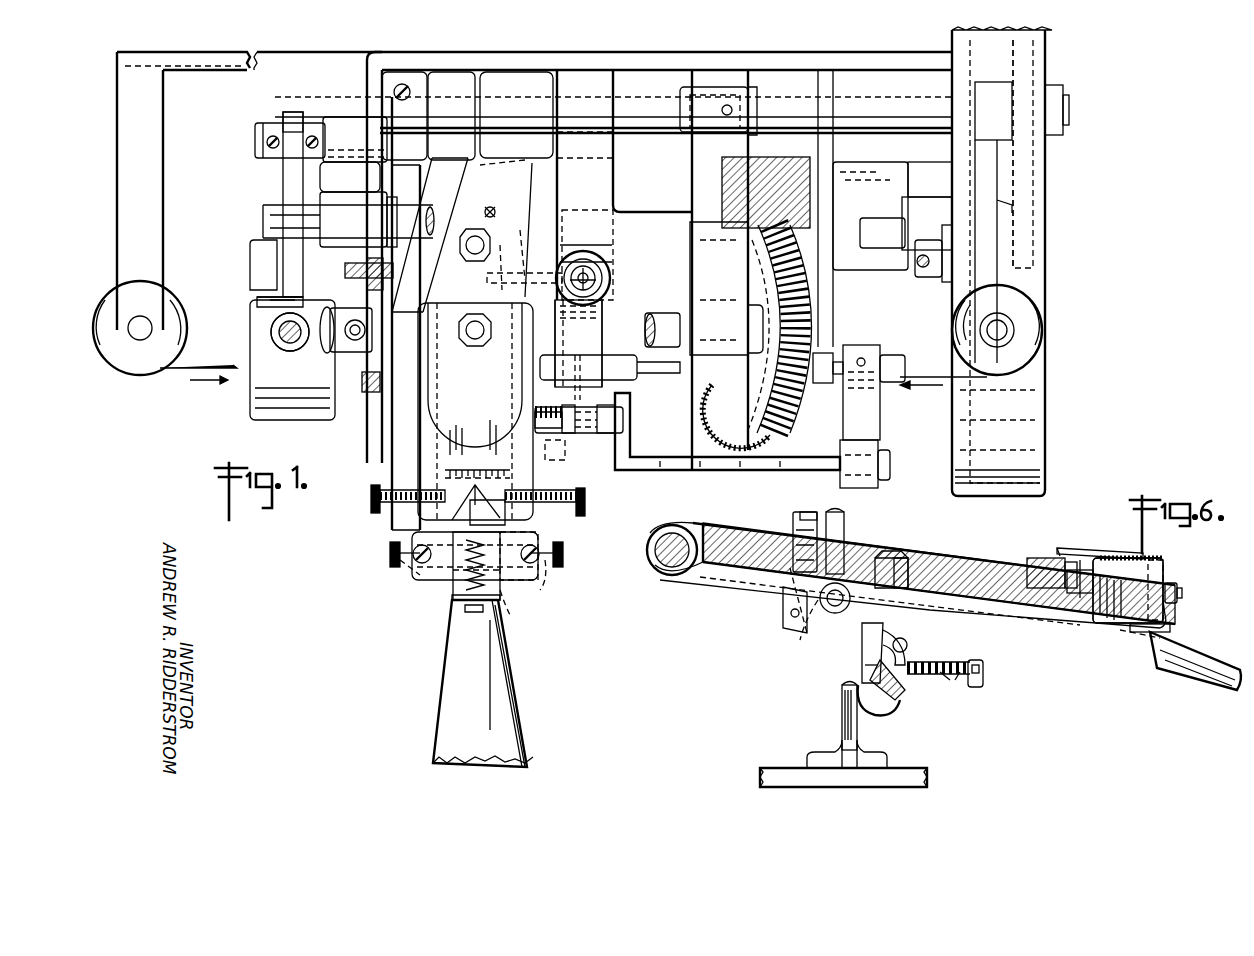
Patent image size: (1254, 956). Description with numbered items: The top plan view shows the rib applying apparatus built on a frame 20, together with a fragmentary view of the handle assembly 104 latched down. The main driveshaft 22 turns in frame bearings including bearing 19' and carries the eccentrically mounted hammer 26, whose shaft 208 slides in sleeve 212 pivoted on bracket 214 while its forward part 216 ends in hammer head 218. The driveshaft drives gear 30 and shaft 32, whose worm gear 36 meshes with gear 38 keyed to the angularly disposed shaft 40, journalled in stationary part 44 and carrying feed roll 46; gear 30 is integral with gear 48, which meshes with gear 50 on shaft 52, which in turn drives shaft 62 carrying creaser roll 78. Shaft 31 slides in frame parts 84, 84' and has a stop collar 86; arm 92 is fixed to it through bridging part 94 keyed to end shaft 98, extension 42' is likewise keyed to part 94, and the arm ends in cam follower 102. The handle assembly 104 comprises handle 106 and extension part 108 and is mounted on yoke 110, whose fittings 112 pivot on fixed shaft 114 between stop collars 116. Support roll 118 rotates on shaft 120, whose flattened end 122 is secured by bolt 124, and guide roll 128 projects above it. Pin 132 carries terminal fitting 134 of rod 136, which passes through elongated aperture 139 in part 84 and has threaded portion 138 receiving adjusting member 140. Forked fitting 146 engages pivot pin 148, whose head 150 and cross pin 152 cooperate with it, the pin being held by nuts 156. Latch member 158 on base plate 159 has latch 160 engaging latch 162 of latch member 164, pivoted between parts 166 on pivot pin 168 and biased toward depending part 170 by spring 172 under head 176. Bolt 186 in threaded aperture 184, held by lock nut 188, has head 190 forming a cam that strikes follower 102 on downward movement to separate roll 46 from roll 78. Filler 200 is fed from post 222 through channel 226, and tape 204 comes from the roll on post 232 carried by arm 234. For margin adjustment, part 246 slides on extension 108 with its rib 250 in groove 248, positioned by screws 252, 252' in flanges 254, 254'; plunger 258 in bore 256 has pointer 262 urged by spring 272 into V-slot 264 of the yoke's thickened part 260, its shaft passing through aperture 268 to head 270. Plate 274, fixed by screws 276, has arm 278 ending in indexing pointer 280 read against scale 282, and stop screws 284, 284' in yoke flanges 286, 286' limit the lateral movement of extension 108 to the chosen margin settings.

In FIG. 1, the bearing 19' is at (350, 180).
In FIG. 1, the frame 20 is at (386, 56).
In FIG. 1, the main driveshaft 22 is at (258, 212).
In FIG. 1, the hammer 26 is at (278, 178).
In FIG. 1, the gear 30 is at (1025, 240).
In FIG. 1, the shaft 31 is at (638, 356).
In FIG. 1, the shaft 32 is at (885, 180).
In FIG. 1, the worm gear 36 is at (812, 160).
In FIG. 1, the gear 38 is at (791, 329).
In FIG. 1, the angularly disposed shaft 40 is at (665, 312).
In FIG. 1, the extension 42' is at (778, 375).
In FIG. 1, the frame part 44 is at (726, 288).
In FIG. 1, the feed roll 46 is at (320, 352).
In FIG. 1, the gear 48 is at (988, 80).
In FIG. 1, the gear 50 is at (988, 170).
In FIG. 1, the shaft 52 is at (935, 278).
In FIG. 1, the shaft 62 is at (270, 330).
In FIG. 1, the creaser roll 78 is at (282, 350).
In FIG. 1, the frame part 84 is at (652, 270).
In FIG. 1, the frame part 84' is at (813, 250).
In FIG. 1, the stop collar 86 is at (608, 340).
In FIG. 1, the arm 92 is at (698, 460).
In FIG. 1, the bridging part 94 is at (880, 425).
In FIG. 1, the end shaft 98 is at (892, 465).
In FIG. 1, the cam follower 102 is at (630, 425).
In FIG. 1, the handle assembly 104 is at (440, 408).
In FIG. 1, the handle 106 is at (520, 690).
In FIG. 6, the handle 106 is at (1212, 655).
In FIG. 1, the extension part 108 is at (475, 379).
In FIG. 1, the yoke 110 is at (530, 140).
In FIG. 6, the yoke 110 is at (708, 518).
In FIG. 1, the fittings 112 is at (455, 74).
In FIG. 1, the fixed shaft 114 is at (527, 80).
In FIG. 6, the fixed shaft 114 is at (670, 565).
In FIG. 1, the stop collars 116 is at (407, 74).
In FIG. 1, the bottom support roll 118 is at (250, 386).
In FIG. 1, the shaft 120 is at (396, 335).
In FIG. 1, the flattened part 122 is at (460, 340).
In FIG. 6, the flattened part 122 is at (875, 555).
In FIG. 1, the bolt 124 is at (500, 345).
In FIG. 6, the bolt 124 is at (905, 558).
In FIG. 1, the guide roll 128 is at (358, 342).
In FIG. 1, the pin 132 is at (517, 247).
In FIG. 6, the pin 132 is at (833, 612).
In FIG. 6, the terminal fitting 134 is at (801, 628).
In FIG. 1, the rod 136 is at (586, 265).
In FIG. 6, the rod 136 is at (845, 520).
In FIG. 1, the threaded end portion 138 is at (576, 295).
In FIG. 1, the elongated aperture 139 is at (600, 272).
In FIG. 1, the adjusting member 140 is at (600, 280).
In FIG. 1, the forked fitting 146 is at (498, 210).
In FIG. 6, the forked fitting 146 is at (770, 595).
In FIG. 1, the pivot pin 148 is at (478, 258).
In FIG. 6, the pivot pin 148 is at (808, 510).
In FIG. 6, the enlarged head 150 is at (790, 632).
In FIG. 6, the cross pin 152 is at (790, 613).
In FIG. 1, the nuts 156 is at (475, 228).
In FIG. 6, the nuts 156 is at (793, 520).
In FIG. 6, the latch member 158 is at (845, 740).
In FIG. 6, the frame base plate 159 is at (912, 770).
In FIG. 6, the latch 160 is at (845, 690).
In FIG. 6, the latch 162 is at (885, 718).
In FIG. 6, the latch member 164 is at (895, 698).
In FIG. 6, the spaced parts 166 is at (907, 645).
In FIG. 6, the pivot pin 168 is at (925, 676).
In FIG. 6, the part 170 is at (862, 640).
In FIG. 6, the spring 172 is at (955, 682).
In FIG. 6, the head 176 is at (983, 672).
In FIG. 1, the threaded aperture 184 is at (560, 425).
In FIG. 1, the bolt 186 is at (595, 410).
In FIG. 1, the lock nut 188 is at (588, 366).
In FIG. 1, the cam 190 is at (620, 405).
In FIG. 1, the filler 200 is at (925, 375).
In FIG. 1, the tape 204 is at (172, 372).
In FIG. 1, the shaft 208 is at (291, 110).
In FIG. 1, the sleeve 212 is at (270, 124).
In FIG. 1, the bracket 214 is at (343, 120).
In FIG. 1, the forward part 216 is at (282, 254).
In FIG. 1, the hammer head 218 is at (270, 292).
In FIG. 1, the post 222 is at (1000, 332).
In FIG. 1, the channel 226 is at (392, 272).
In FIG. 1, the post 232 is at (148, 323).
In FIG. 1, the arm 234 is at (160, 225).
In FIG. 1, the part 246 is at (455, 604).
In FIG. 6, the part 246 is at (1163, 588).
In FIG. 6, the groove 248 is at (1133, 640).
In FIG. 6, the projecting rib 250 is at (1122, 632).
In FIG. 1, the adjusting screw 252 is at (385, 550).
In FIG. 1, the adjusting screw 252' is at (570, 550).
In FIG. 1, the flange 254 is at (384, 577).
In FIG. 1, the flange 254' is at (553, 585).
In FIG. 1, the central bore 256 is at (455, 568).
In FIG. 6, the plunger 258 is at (1095, 568).
In FIG. 6, the thickened part 260 is at (1030, 570).
In FIG. 1, the pointer 262 is at (476, 503).
In FIG. 6, the pointer 262 is at (1068, 585).
In FIG. 1, the V-slot 264 is at (448, 478).
In FIG. 1, the aperture 268 is at (510, 612).
In FIG. 1, the securing device 270 is at (475, 614).
In FIG. 6, the securing device 270 is at (1182, 603).
In FIG. 1, the spring 272 is at (452, 598).
In FIG. 1, the plate 274 is at (535, 580).
In FIG. 6, the plate 274 is at (1158, 575).
In FIG. 1, the screws 276 is at (418, 538).
In FIG. 6, the screws 276 is at (1138, 557).
In FIG. 6, the arm 278 is at (1073, 556).
In FIG. 6, the indexing pointer 280 is at (1060, 550).
In FIG. 1, the scale 282 is at (448, 470).
In FIG. 1, the stop screw 284 is at (385, 499).
In FIG. 1, the stop screw 284' is at (560, 485).
In FIG. 1, the flange 286 is at (394, 508).
In FIG. 1, the flange 286' is at (569, 500).